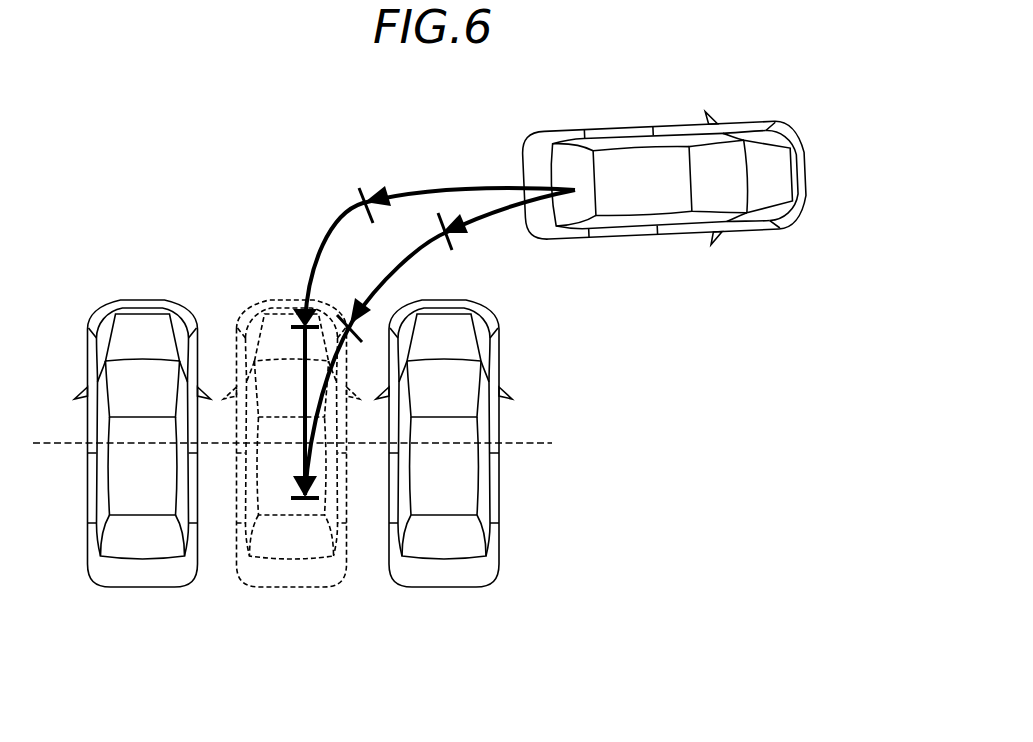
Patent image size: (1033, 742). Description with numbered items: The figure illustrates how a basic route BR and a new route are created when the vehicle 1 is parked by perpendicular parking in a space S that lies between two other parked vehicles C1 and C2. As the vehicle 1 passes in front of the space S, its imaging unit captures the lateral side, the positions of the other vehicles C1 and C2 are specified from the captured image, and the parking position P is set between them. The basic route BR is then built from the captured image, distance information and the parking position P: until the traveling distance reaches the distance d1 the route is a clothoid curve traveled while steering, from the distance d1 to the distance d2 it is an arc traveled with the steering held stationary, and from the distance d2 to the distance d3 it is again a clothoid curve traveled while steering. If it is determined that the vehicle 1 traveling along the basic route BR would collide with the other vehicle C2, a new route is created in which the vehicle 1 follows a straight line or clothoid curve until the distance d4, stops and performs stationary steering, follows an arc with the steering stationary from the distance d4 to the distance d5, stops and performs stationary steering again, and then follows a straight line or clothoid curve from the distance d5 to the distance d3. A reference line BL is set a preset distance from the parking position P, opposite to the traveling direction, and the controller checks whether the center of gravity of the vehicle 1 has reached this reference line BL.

The vehicle 1 is at (670, 240).
The other vehicle C1 is at (143, 570).
The other vehicle C2 is at (445, 570).
The parking position P is at (305, 560).
The space S is at (353, 610).
The reference line BL is at (57, 445).
The basic route BR is at (495, 222).
The distance d1 is at (450, 250).
The distance d2 is at (357, 338).
The distance d3 is at (293, 560).
The distance d4 is at (365, 190).
The distance d5 is at (297, 308).